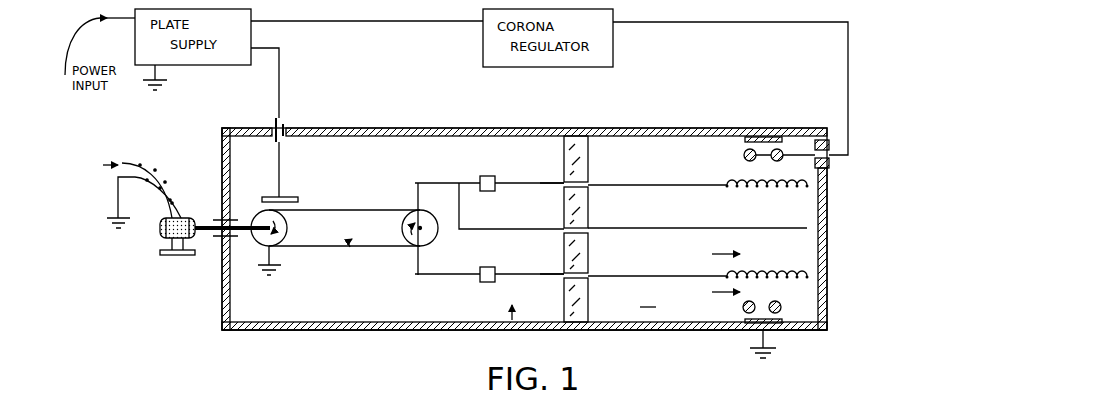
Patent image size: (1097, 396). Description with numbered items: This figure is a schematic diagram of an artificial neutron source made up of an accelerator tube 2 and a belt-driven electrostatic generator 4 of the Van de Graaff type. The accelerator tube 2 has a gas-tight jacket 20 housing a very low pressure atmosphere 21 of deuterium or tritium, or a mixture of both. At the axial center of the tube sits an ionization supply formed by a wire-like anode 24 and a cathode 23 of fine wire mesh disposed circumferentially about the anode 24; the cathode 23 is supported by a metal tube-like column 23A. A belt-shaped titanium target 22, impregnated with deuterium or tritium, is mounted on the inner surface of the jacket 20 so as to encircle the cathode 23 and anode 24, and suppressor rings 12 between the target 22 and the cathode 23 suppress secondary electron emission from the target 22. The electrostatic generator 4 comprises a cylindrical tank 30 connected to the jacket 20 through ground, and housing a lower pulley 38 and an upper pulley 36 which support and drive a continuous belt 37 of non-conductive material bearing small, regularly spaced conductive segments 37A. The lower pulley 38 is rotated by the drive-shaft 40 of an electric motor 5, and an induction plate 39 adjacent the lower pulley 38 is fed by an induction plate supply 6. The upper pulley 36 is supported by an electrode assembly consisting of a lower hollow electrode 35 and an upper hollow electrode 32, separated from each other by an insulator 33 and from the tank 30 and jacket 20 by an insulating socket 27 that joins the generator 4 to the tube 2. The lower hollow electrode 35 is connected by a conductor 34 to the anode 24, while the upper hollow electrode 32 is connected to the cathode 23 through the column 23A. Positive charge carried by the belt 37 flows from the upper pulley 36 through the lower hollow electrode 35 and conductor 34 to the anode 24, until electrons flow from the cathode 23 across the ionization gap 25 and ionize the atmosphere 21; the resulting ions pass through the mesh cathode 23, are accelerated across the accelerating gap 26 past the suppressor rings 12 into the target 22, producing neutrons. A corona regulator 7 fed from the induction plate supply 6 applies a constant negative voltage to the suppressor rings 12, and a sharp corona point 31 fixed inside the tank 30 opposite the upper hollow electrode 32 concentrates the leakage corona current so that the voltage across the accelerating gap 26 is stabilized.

The accelerator tube 2 is at (642, 127).
The electrostatic generator 4 is at (454, 127).
The electric motor 5 is at (200, 218).
The induction plate supply 6 is at (252, 37).
The corona regulator 7 is at (613, 50).
The suppressor rings 12 is at (745, 157).
The gas-tight jacket 20 is at (697, 330).
The atmosphere 21 is at (649, 300).
The target 22 is at (745, 140).
The cathode 23 is at (786, 185).
The column 23A is at (686, 185).
The anode 24 is at (760, 228).
The ionization gap 25 is at (713, 254).
The accelerating gap 26 is at (713, 292).
The insulating socket 27 is at (588, 168).
The cylindrical tank 30 is at (360, 330).
The corona point 31 is at (511, 309).
The upper hollow electrode 32 is at (549, 183).
The insulator 33 is at (491, 176).
The conductor 34 is at (511, 229).
The lower hollow electrode 35 is at (435, 183).
The upper pulley 36 is at (402, 228).
The continuous belt 37 is at (368, 210).
The segments 37A is at (351, 249).
The lower pulley 38 is at (287, 228).
The induction plate 39 is at (290, 197).
The drive-shaft 40 is at (205, 240).